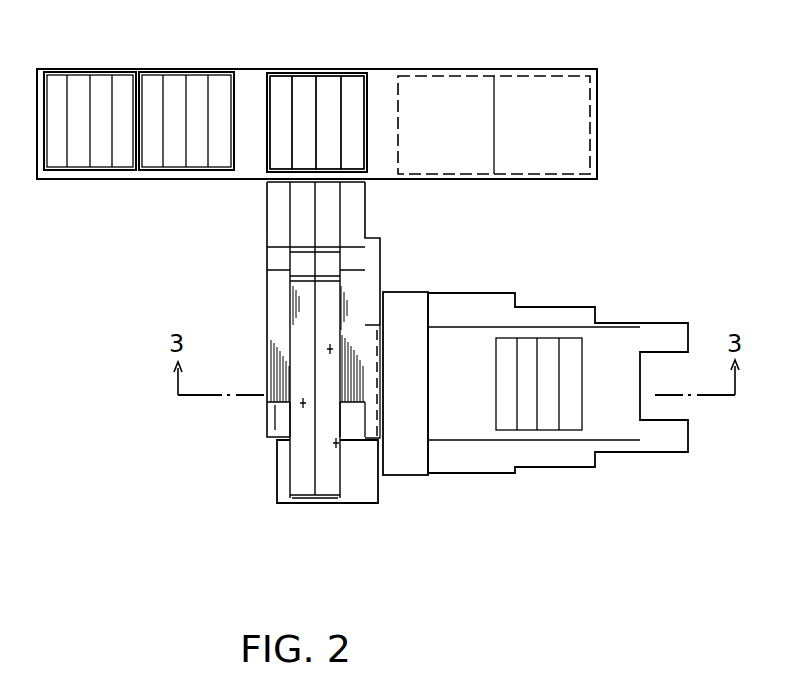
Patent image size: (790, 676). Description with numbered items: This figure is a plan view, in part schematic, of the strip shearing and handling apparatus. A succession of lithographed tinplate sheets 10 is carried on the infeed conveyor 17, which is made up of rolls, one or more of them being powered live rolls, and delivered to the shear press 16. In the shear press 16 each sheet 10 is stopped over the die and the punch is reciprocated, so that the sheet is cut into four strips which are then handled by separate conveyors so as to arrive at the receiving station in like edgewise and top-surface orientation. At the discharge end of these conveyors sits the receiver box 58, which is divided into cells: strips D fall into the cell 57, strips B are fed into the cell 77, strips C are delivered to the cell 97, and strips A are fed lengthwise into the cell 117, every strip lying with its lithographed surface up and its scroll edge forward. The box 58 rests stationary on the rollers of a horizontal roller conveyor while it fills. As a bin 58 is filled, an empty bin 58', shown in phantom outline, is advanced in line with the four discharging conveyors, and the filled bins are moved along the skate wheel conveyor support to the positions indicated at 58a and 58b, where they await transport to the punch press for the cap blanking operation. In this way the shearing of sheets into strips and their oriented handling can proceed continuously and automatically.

The sheet 10 is at (582, 384).
The shear press 16 is at (415, 396).
The infeed conveyor 17 is at (472, 396).
The receiver box 58 is at (317, 98).
The filled bin position 58a is at (193, 72).
The filled bin position 58b is at (83, 72).
The empty bin 58' is at (494, 100).
The cell 97 is at (290, 127).
The cell 77 is at (314, 127).
The cell 57 is at (338, 127).
The cell 117 is at (362, 127).